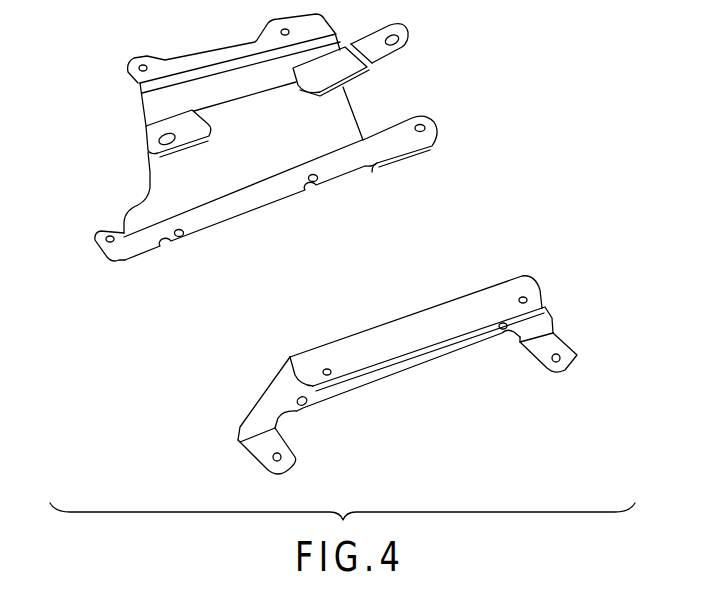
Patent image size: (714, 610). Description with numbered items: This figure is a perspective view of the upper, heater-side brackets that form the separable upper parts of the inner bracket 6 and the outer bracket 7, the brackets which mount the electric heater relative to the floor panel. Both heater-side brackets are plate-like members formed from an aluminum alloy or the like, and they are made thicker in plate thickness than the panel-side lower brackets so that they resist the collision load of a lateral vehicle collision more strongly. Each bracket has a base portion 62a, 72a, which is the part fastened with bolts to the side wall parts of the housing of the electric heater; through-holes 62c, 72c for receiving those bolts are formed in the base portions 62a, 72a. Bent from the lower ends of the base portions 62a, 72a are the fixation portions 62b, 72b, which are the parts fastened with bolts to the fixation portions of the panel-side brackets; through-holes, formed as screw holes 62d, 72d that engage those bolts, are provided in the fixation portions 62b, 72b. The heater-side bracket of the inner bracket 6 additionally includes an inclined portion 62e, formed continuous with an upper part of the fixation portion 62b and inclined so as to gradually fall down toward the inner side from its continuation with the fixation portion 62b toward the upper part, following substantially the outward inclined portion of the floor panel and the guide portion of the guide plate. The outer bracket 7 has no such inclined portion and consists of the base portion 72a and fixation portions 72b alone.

The inner bracket 6 is at (323, 18).
The base portion 62a is at (257, 198).
The fixation portion 62b is at (102, 235).
The through-hole 62c is at (184, 239).
The through-hole (screw hole) 62d is at (110, 235).
The inclined portion 62e is at (327, 130).
The outer bracket 7 is at (527, 281).
The base portion 72a is at (400, 365).
The fixation portion 72b is at (250, 448).
The through-hole 72c is at (307, 406).
The through-hole (screw hole) 72d is at (276, 453).